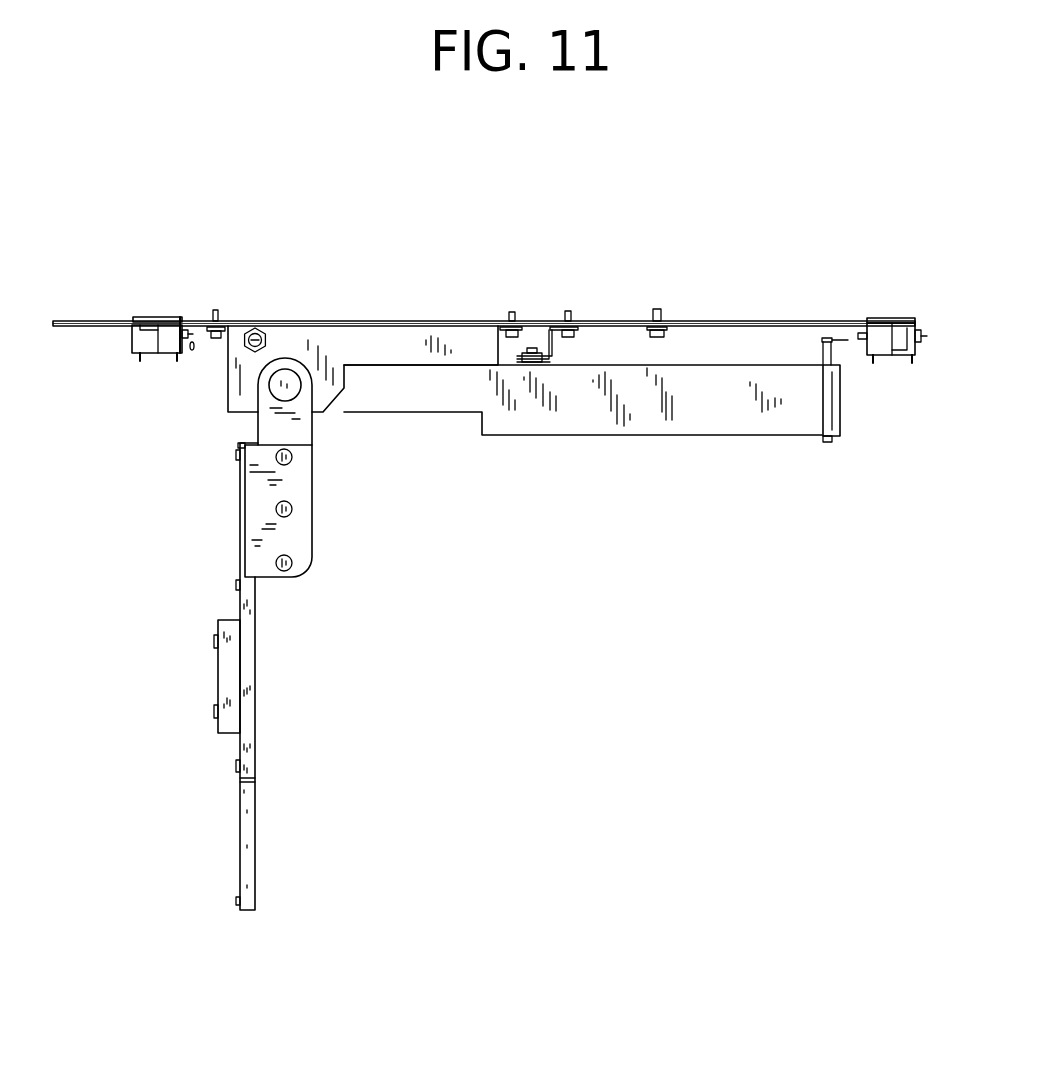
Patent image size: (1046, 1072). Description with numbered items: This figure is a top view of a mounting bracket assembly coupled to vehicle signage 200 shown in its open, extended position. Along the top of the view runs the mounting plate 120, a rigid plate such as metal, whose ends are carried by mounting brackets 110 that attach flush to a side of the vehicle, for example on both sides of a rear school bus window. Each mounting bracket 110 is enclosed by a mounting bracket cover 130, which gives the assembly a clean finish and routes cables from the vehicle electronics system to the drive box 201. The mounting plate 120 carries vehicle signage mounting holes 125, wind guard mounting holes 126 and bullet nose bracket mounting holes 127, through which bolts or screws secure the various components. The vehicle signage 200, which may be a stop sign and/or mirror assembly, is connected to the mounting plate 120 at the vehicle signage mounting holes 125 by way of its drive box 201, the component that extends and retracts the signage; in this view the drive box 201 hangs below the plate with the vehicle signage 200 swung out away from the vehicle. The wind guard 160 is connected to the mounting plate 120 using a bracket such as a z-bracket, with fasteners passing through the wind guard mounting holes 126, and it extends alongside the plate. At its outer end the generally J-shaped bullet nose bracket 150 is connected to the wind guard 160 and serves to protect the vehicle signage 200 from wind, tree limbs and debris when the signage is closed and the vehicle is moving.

The mounting bracket 110 is at (158, 318).
The mounting plate 120 is at (788, 320).
The vehicle signage mounting holes 125 is at (213, 310).
The wind guard mounting holes 126 is at (568, 311).
The bullet nose bracket mounting holes 127 is at (657, 309).
The mounting bracket cover 130 is at (145, 362).
The bullet nose bracket 150 is at (833, 418).
The wind guard 160 is at (680, 425).
The vehicle signage 200 is at (248, 755).
The drive box 201 is at (227, 403).